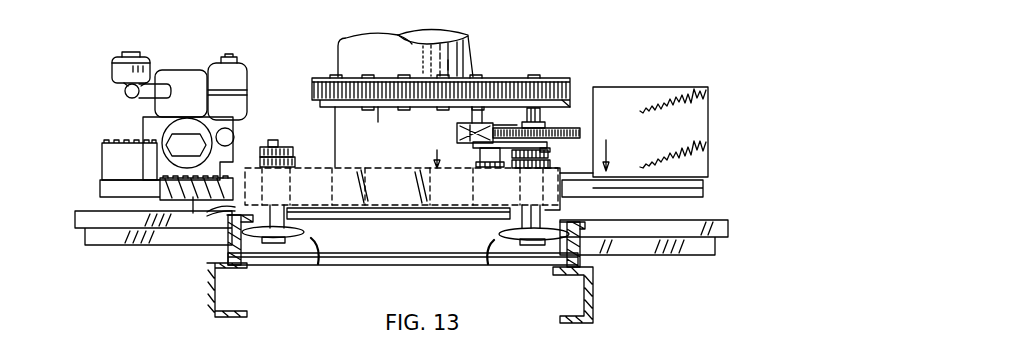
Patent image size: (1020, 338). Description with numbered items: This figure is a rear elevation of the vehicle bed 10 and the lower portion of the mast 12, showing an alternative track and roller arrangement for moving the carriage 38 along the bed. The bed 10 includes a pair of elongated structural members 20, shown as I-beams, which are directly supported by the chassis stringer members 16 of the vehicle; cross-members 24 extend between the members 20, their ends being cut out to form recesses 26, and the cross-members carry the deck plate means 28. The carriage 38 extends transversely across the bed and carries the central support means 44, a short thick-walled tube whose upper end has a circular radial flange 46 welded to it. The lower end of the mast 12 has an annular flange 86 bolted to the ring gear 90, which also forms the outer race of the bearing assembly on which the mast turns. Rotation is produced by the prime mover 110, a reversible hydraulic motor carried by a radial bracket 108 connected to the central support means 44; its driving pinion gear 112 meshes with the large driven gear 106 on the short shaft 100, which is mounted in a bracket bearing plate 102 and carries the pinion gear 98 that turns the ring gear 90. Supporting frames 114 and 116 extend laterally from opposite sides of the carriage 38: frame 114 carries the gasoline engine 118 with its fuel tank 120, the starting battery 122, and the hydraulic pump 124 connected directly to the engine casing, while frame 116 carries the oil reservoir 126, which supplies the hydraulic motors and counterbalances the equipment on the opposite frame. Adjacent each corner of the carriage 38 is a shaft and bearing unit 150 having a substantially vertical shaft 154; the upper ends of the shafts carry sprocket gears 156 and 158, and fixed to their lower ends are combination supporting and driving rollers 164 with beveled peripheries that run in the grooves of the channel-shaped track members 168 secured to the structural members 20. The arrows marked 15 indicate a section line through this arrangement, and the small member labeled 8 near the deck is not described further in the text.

The support member 8 is at (214, 207).
The vehicle bed 10 is at (75, 222).
The mast 12 is at (345, 55).
The section line 15 is at (524, 155).
The chassis stringer members 16 is at (207, 280).
The elongated structural members 20 is at (227, 250).
The cross-members 24 is at (365, 265).
The recesses 26 is at (311, 240).
The deck plate means 28 is at (340, 220).
The carriage 38 is at (330, 167).
The central support means 44 is at (342, 125).
The circular radial flange 46 is at (372, 124).
The annular flange 86 is at (470, 70).
The ring gear 90 is at (311, 90).
The pinion gear 98 is at (565, 96).
The short shaft 100 is at (527, 113).
The bracket bearing plate 102 is at (580, 113).
The driven gear 106 is at (545, 156).
The radial bracket 108 is at (457, 133).
The prime mover 110 is at (478, 160).
The driving pinion gear 112 is at (455, 127).
The supporting frame 114 is at (100, 192).
The supporting frame 116 is at (697, 192).
The gasoline engine 118 is at (143, 133).
The fuel tank 120 is at (213, 68).
The starting battery 122 is at (108, 160).
The hydraulic pump 124 is at (175, 148).
The oil reservoir 126 is at (633, 87).
The shaft and bearing unit 150 is at (272, 147).
The vertical shaft 154 is at (282, 212).
The sprocket gear 156 is at (263, 151).
The sprocket gear 158 is at (260, 158).
The supporting and driving roller 164 is at (290, 247).
The track member 168 is at (227, 220).